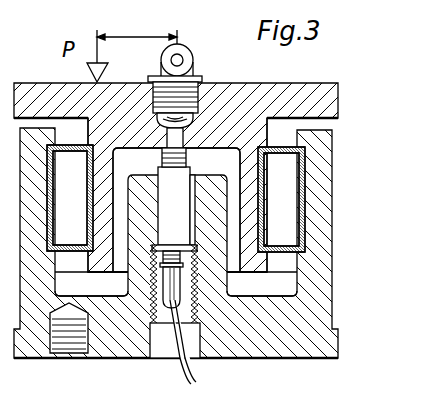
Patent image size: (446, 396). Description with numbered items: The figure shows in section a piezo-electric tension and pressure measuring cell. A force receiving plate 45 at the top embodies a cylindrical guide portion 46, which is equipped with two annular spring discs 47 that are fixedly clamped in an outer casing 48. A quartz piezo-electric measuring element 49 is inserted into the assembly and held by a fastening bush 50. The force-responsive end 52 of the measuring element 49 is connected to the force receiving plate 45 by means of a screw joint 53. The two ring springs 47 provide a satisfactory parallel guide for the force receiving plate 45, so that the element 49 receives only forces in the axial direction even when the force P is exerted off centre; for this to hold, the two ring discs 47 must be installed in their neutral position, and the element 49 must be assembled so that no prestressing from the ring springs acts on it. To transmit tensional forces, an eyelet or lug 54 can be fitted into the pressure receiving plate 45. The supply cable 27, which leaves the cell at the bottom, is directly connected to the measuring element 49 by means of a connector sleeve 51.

The supply cable 27 is at (179, 374).
The force receiving plate 45 is at (322, 95).
The cylindrical guide portion 46 is at (250, 187).
The annular spring discs 47 is at (285, 143).
The outer casing 48 is at (313, 304).
The quartz piezo-electric measuring element 49 is at (158, 200).
The fastening bush 50 is at (225, 291).
The connector sleeve 51 is at (168, 288).
The force-responsive end 52 is at (164, 159).
The screw joint 53 is at (182, 130).
The eyelet or lug 54 is at (194, 63).